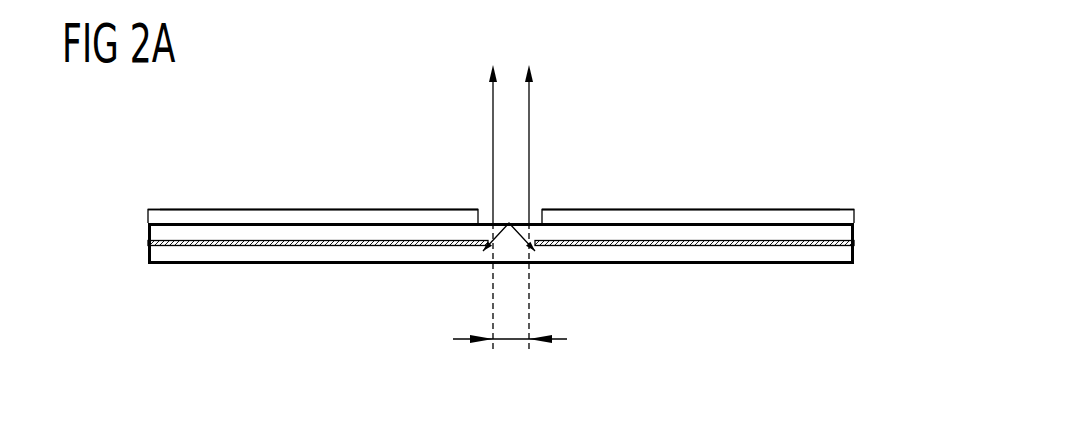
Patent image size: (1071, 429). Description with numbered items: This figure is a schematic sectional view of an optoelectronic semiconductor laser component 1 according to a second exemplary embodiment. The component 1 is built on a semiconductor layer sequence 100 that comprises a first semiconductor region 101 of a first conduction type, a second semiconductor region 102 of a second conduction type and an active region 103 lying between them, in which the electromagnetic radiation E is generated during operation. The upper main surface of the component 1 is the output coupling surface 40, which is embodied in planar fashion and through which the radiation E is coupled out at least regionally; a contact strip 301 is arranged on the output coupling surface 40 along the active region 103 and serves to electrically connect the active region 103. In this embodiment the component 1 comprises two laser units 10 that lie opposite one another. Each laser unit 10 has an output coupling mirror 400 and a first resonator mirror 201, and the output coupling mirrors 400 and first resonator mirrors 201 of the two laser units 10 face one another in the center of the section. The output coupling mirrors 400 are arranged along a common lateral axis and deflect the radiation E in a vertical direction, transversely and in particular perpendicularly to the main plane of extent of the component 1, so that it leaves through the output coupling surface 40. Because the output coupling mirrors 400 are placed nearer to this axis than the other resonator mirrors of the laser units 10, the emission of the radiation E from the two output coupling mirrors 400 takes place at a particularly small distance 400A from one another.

The optoelectronic semiconductor laser component 1 is at (724, 86).
The laser unit 10 is at (302, 184).
The output coupling surface 40 is at (407, 206).
The semiconductor layer sequence 100 is at (502, 240).
The first semiconductor region 101 is at (500, 254).
The second semiconductor region 102 is at (150, 230).
The active region 103 is at (150, 243).
The first resonator mirror 201 is at (500, 237).
The contact strip 301 is at (185, 217).
The output coupling mirror 400 is at (516, 210).
The distance 400A is at (512, 340).